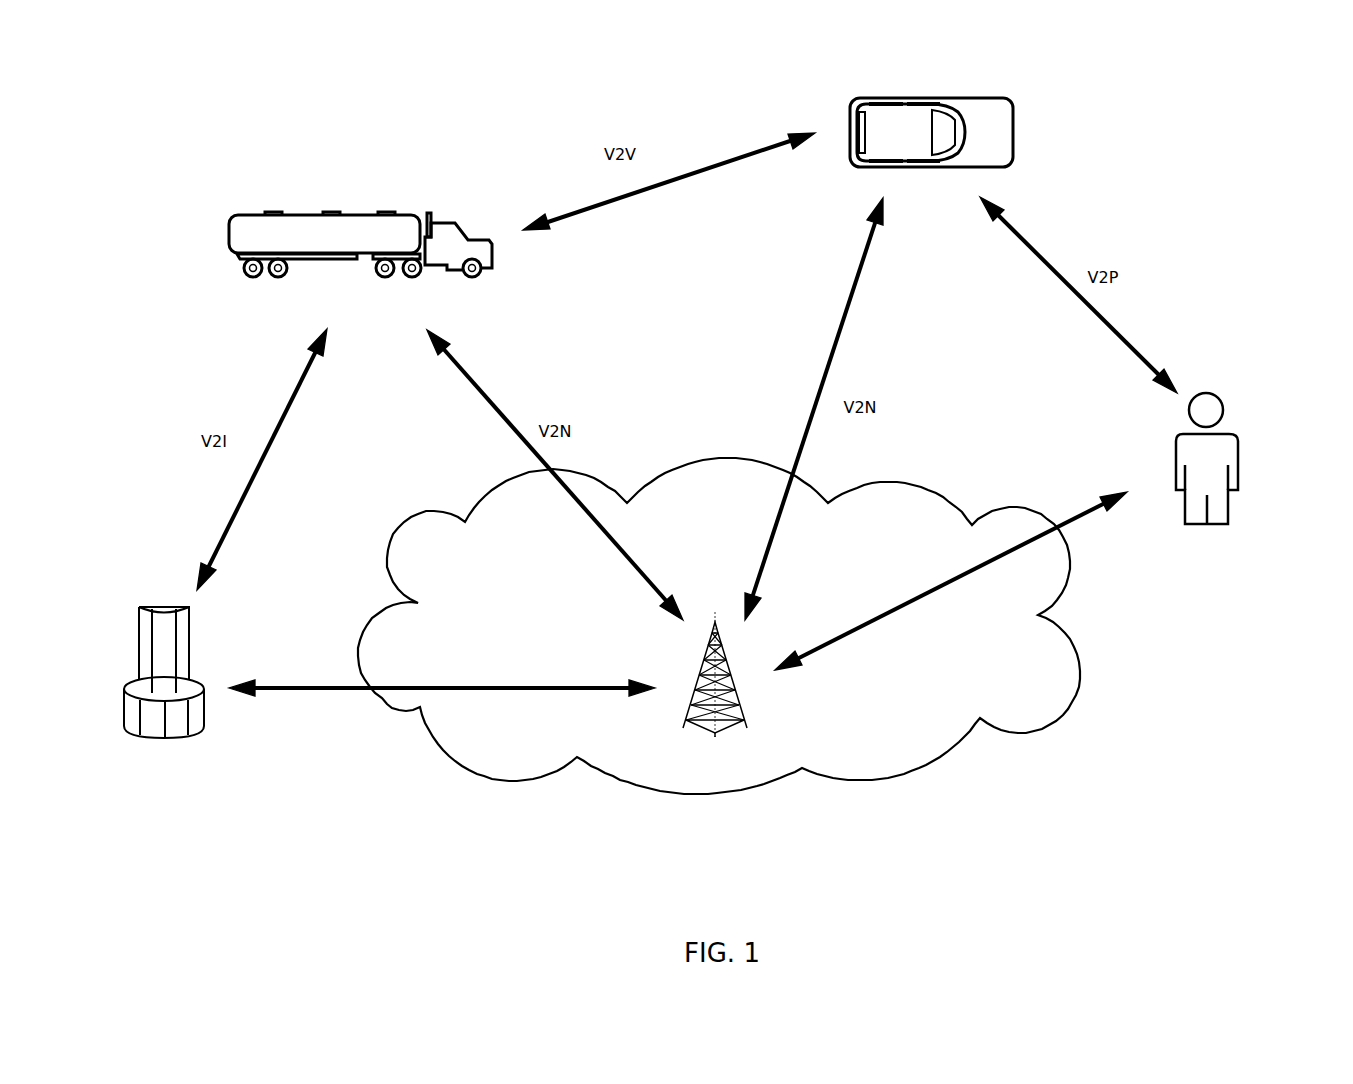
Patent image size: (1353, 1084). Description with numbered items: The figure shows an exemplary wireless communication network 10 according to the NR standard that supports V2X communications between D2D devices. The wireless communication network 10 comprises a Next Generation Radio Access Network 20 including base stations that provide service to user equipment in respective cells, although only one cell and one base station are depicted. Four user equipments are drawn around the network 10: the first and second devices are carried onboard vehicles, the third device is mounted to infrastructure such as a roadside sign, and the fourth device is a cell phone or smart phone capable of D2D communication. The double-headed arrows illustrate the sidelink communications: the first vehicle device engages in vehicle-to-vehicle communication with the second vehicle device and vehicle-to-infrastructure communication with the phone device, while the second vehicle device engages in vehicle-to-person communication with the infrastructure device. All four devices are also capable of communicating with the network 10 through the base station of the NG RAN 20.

The wireless communication network 10 is at (719, 626).
The Next Generation Radio Access Network 20 is at (717, 692).